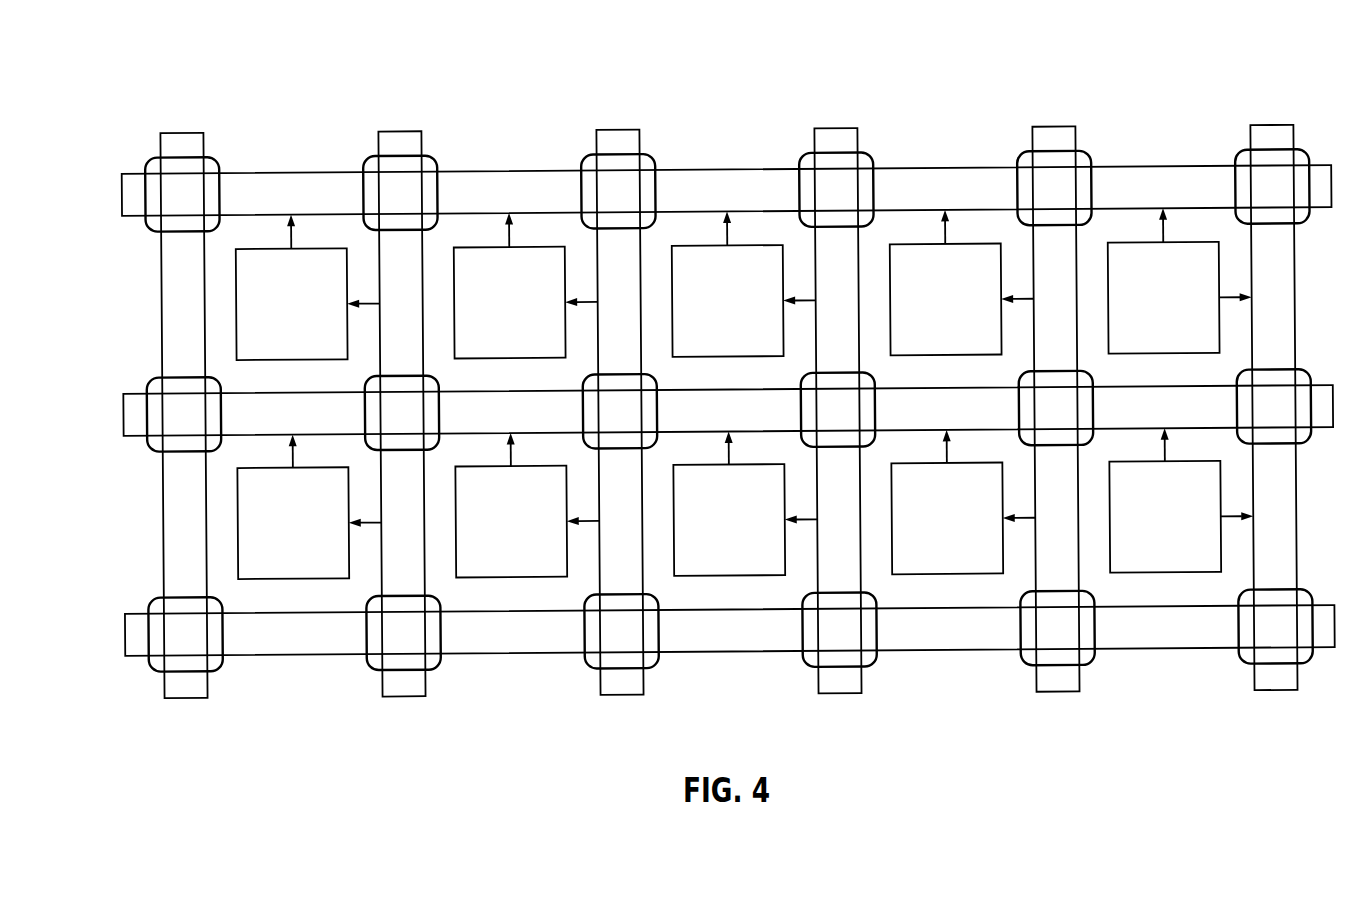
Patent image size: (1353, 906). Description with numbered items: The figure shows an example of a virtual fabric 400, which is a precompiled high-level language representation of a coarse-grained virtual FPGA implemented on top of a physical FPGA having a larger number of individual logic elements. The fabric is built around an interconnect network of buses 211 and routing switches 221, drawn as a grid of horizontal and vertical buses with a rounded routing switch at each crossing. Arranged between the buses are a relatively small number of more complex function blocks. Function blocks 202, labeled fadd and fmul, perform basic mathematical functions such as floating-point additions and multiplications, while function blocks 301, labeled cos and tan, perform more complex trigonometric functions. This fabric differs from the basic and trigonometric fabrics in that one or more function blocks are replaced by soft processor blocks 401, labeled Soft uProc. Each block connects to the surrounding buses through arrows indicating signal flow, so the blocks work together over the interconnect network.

The virtual fabric 400 is at (158, 80).
The function block 301 is at (269, 246).
The function block 202 is at (705, 246).
The soft processor block 401 is at (1141, 246).
The bus 211 is at (1164, 181).
The routing switch 221 is at (1302, 161).